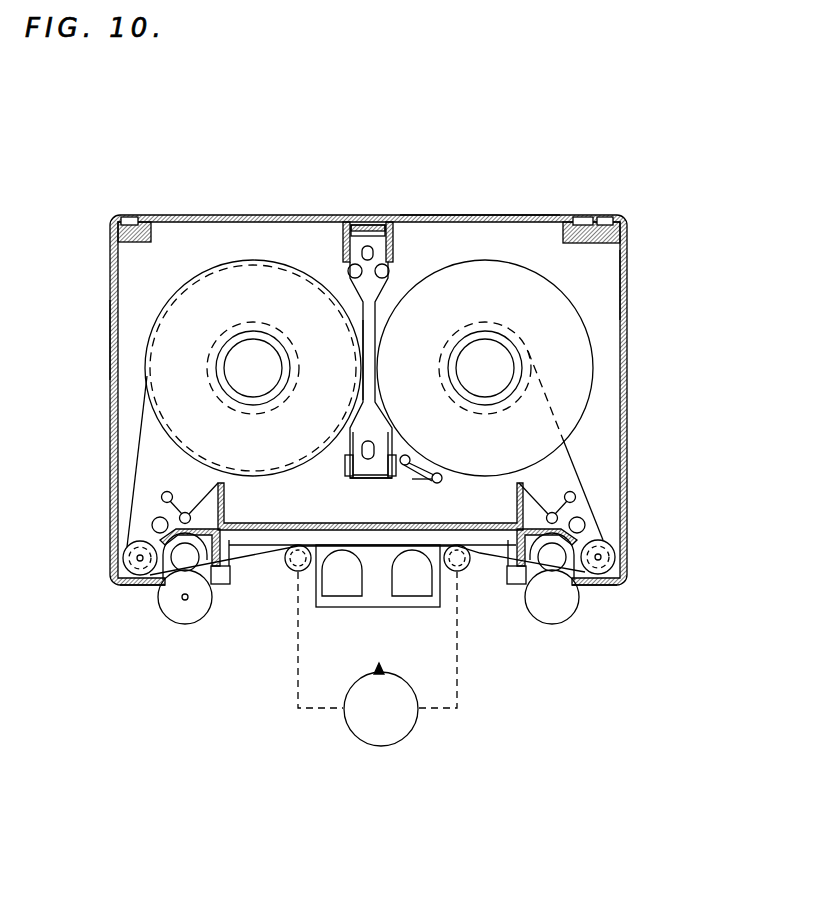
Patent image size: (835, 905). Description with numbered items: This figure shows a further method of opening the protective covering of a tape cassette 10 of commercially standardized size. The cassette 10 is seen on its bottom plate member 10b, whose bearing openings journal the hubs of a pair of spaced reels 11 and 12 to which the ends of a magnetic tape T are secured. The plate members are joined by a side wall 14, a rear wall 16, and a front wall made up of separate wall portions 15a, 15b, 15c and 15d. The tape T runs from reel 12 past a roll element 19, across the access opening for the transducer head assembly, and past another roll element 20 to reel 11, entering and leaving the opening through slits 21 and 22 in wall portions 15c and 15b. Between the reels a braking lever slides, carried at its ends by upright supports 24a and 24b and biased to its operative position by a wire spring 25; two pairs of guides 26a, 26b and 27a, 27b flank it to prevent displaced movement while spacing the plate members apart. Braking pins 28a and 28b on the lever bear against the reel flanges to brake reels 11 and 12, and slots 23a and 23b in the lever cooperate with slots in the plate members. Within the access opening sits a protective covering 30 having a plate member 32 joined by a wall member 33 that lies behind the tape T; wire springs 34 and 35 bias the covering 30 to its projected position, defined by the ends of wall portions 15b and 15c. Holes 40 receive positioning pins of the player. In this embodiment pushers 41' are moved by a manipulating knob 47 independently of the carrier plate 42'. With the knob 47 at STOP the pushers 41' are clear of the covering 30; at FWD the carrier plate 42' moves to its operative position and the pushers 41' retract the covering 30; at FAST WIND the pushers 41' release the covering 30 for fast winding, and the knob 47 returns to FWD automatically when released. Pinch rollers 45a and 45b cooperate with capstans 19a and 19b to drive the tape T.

The cassette 10 is at (633, 260).
The bottom plate member 10b is at (603, 283).
The reel 11 is at (582, 362).
The reel 12 is at (160, 378).
The side wall 14 is at (110, 343).
The front wall portion 15a is at (607, 592).
The front wall portion 15b is at (611, 542).
The front wall portion 15c is at (137, 540).
The front wall portion 15d is at (131, 582).
The rear wall 16 is at (505, 220).
The roll element 19 is at (160, 562).
The capstan 19a is at (585, 578).
The capstan 19b is at (166, 608).
The roll element 20 is at (617, 557).
The slit 21 is at (217, 585).
The slit 22 is at (528, 585).
The slot 23a is at (367, 236).
The slot 23b is at (363, 400).
The upright support 24a is at (347, 480).
The upright support 24b is at (379, 230).
The wire spring 25 is at (432, 462).
The guide 26a is at (340, 243).
The guide 26b is at (398, 243).
The guide 27a is at (348, 456).
The guide 27b is at (395, 456).
The braking pin 28a is at (389, 273).
The braking pin 28b is at (349, 273).
The protective covering 30 is at (490, 552).
The plate member 32 is at (258, 546).
The wall member 33 is at (340, 522).
The wire spring 34 is at (163, 500).
The wire spring 35 is at (575, 502).
The holes 40 is at (152, 523).
The pushers 41' is at (384, 664).
The carrier plate 42' is at (378, 591).
The pinch roller 45a is at (556, 624).
The pinch roller 45b is at (188, 562).
The manipulating knob 47 is at (384, 732).
The magnetic tape T is at (290, 575).